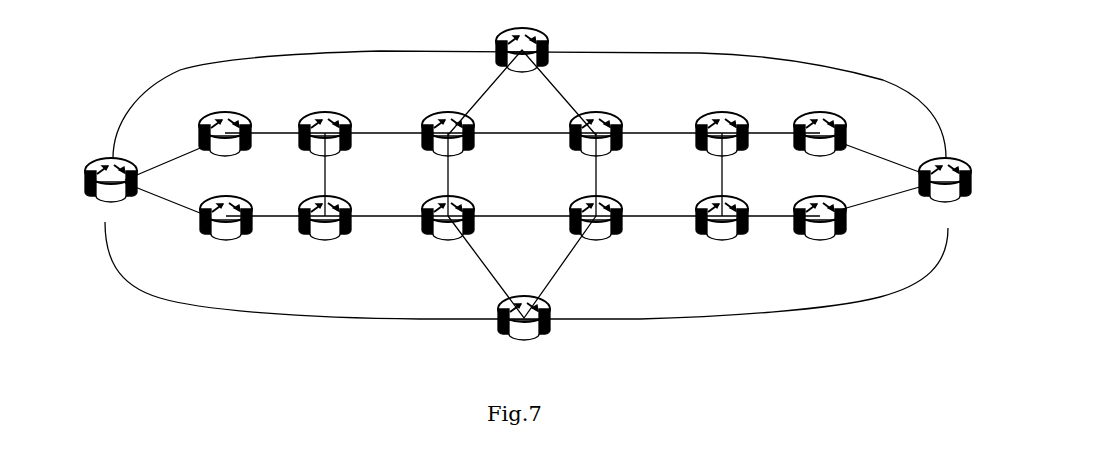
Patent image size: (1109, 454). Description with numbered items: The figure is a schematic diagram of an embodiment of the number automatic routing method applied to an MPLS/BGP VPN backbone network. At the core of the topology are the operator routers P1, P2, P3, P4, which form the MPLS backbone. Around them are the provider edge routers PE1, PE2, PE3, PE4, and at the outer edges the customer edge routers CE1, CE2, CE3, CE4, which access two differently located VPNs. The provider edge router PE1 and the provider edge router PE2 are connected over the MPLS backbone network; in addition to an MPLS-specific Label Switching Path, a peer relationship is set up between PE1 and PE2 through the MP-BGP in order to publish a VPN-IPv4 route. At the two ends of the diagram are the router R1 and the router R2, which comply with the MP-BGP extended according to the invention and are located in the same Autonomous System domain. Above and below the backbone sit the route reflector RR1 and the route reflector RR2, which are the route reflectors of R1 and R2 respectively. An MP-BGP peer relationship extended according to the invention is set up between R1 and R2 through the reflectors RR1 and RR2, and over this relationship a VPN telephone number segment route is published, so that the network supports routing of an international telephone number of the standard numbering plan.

The router R1 is at (111, 192).
The router R2 is at (945, 193).
The route reflector RR1 is at (522, 64).
The route reflector RR2 is at (524, 332).
The customer edge router CE1 is at (225, 147).
The customer edge router CE2 is at (226, 231).
The customer edge router CE3 is at (820, 147).
The customer edge router CE4 is at (820, 231).
The provider edge router PE1 is at (336, 147).
The provider edge router PE2 is at (336, 231).
The provider edge router PE3 is at (712, 147).
The provider edge router PE4 is at (712, 231).
The operator router P1 is at (462, 147).
The operator router P2 is at (462, 231).
The operator router P3 is at (579, 147).
The operator router P4 is at (579, 231).